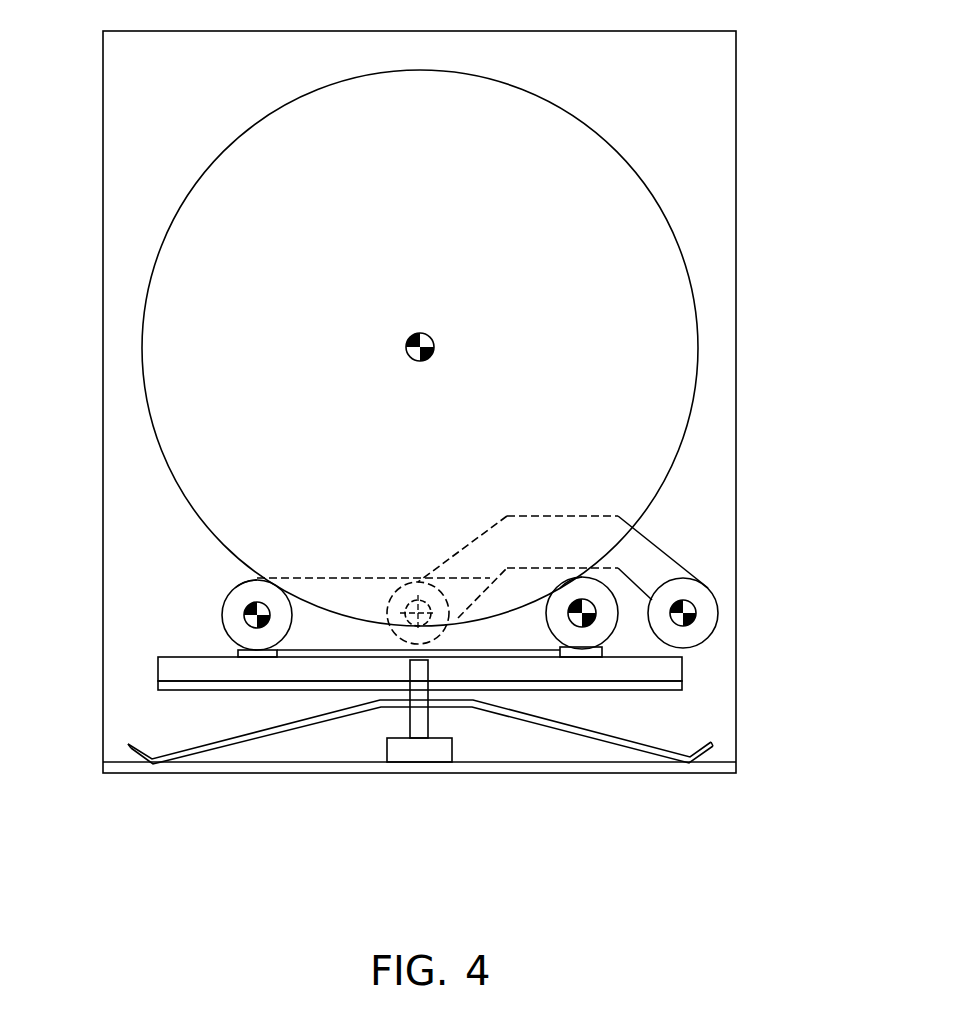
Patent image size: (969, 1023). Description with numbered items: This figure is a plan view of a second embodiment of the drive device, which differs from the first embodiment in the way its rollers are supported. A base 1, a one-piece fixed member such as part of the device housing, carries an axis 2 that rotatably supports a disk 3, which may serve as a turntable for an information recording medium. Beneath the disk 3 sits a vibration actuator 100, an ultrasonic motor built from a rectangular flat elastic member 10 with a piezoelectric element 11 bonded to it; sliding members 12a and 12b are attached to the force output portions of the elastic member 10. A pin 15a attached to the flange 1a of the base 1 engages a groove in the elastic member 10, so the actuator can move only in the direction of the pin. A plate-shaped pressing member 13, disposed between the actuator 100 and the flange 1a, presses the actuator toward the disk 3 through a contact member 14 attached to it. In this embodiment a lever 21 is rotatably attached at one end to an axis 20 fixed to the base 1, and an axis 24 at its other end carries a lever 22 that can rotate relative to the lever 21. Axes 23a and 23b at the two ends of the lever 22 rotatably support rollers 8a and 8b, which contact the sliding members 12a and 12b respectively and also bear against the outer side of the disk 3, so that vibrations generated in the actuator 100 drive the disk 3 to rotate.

The base 1 is at (697, 118).
The flange 1a is at (713, 768).
The axis 2 is at (433, 342).
The disk 3 is at (662, 327).
The roller 8a is at (587, 600).
The roller 8b is at (247, 603).
The elastic member 10 is at (645, 663).
The piezoelectric element 11 is at (638, 685).
The sliding member 12a is at (662, 668).
The sliding member 12b is at (255, 657).
The pressing member 13 is at (343, 717).
The contact member 14 is at (430, 693).
The pin 15a is at (407, 763).
The axis 20 is at (697, 617).
The lever 21 is at (550, 530).
The lever 22 is at (323, 623).
The axis 23a is at (585, 588).
The axis 23b is at (226, 600).
The axis 24 is at (410, 604).
The vibration actuator 100 is at (823, 662).